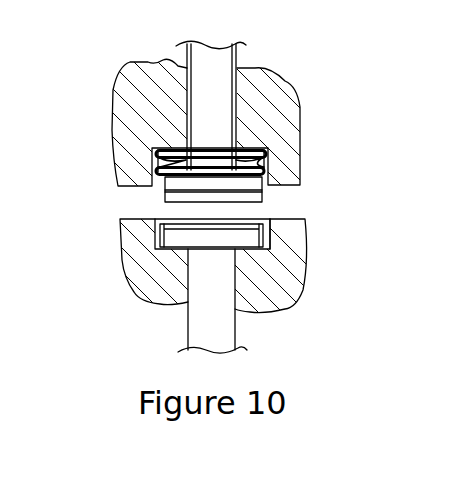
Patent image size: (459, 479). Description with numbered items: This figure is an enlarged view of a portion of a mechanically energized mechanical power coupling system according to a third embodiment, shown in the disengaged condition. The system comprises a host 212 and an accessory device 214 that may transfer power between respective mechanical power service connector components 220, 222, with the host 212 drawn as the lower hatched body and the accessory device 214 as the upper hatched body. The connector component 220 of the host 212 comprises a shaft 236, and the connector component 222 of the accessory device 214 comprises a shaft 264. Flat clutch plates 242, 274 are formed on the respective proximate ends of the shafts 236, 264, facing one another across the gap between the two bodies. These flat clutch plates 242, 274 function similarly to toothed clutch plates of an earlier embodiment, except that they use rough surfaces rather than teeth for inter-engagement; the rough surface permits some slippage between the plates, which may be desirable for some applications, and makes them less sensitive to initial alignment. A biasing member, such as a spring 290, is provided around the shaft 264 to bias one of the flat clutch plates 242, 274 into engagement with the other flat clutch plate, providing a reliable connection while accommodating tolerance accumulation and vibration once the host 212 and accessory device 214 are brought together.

The host 212 is at (126, 294).
The accessory device 214 is at (110, 113).
The mechanical power service connector component 220 is at (250, 267).
The mechanical power service connector component 222 is at (166, 126).
The shaft 236 is at (208, 318).
The flat clutch plate 242 is at (172, 237).
The shaft 264 is at (213, 58).
The flat clutch plate 274 is at (243, 182).
The spring 290 is at (243, 163).